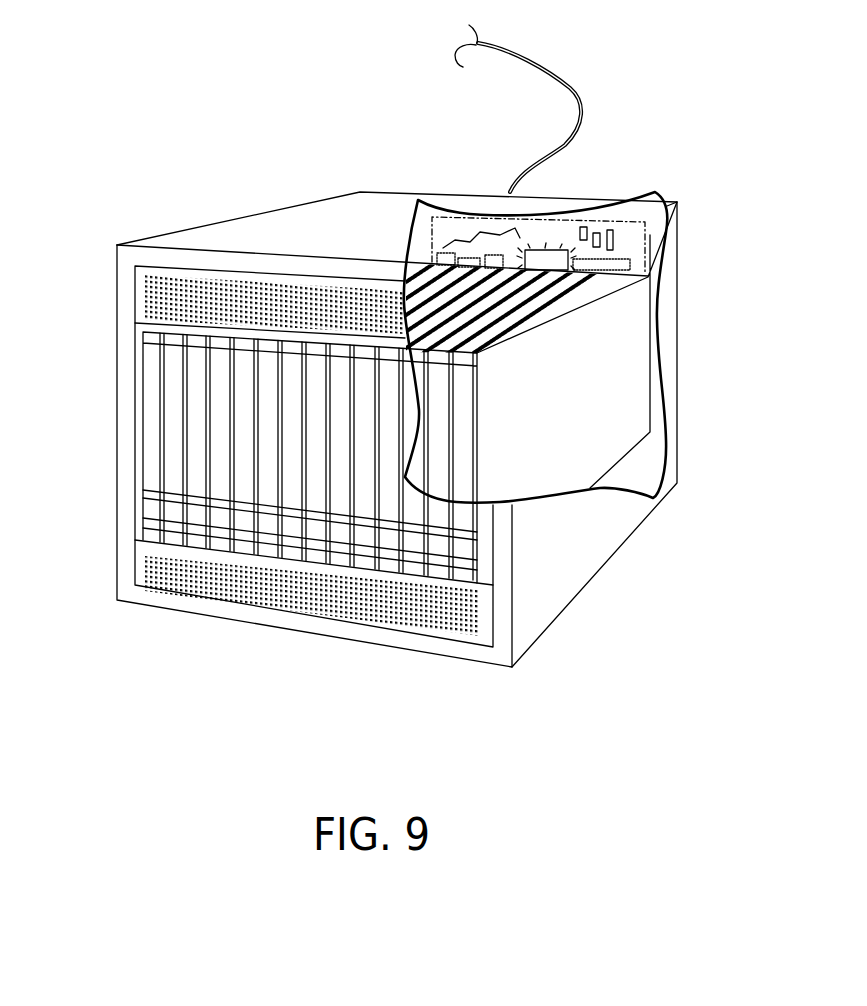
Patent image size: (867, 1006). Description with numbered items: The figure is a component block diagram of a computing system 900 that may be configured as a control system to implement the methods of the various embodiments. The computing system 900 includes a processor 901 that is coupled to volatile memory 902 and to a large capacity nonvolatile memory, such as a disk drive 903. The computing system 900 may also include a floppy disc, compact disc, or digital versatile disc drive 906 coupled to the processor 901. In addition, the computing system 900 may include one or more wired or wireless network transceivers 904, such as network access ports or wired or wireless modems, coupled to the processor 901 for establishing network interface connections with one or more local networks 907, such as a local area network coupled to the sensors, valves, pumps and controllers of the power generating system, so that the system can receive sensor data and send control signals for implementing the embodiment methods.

The computing system 900 is at (288, 207).
The processor 901 is at (547, 262).
The volatile memory 902 is at (623, 270).
The disk drive 903 is at (198, 393).
The network transceivers 904 is at (433, 258).
The disc drive 906 is at (173, 427).
The local networks 907 is at (582, 97).